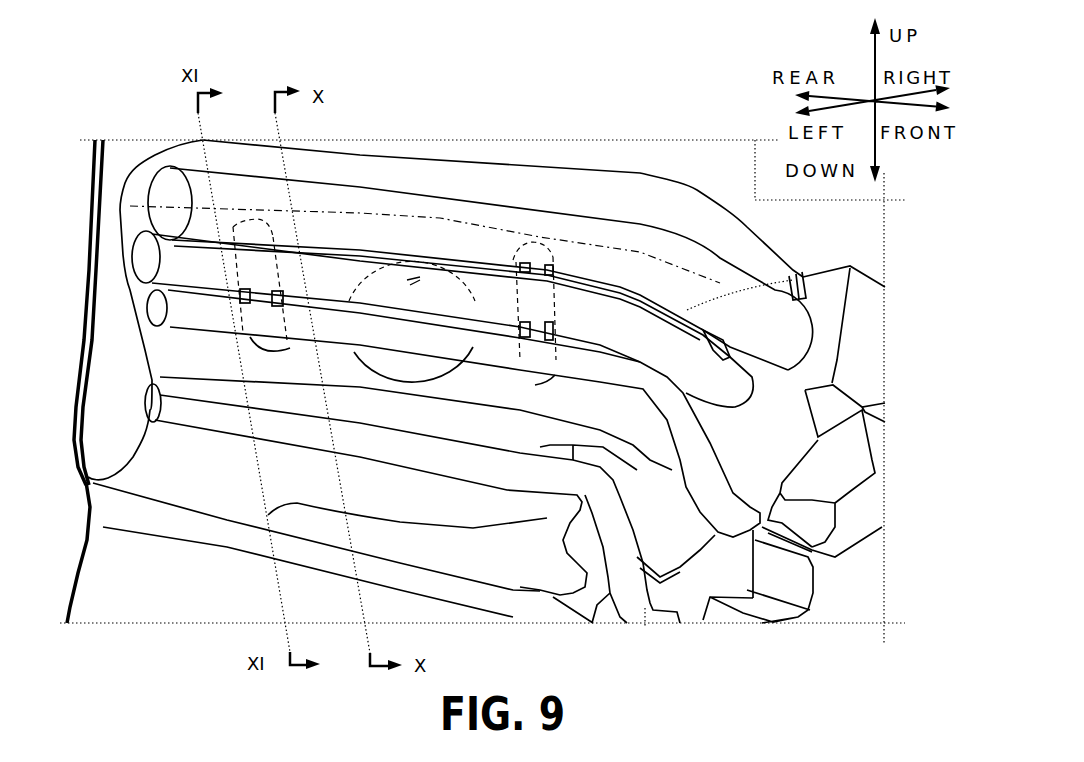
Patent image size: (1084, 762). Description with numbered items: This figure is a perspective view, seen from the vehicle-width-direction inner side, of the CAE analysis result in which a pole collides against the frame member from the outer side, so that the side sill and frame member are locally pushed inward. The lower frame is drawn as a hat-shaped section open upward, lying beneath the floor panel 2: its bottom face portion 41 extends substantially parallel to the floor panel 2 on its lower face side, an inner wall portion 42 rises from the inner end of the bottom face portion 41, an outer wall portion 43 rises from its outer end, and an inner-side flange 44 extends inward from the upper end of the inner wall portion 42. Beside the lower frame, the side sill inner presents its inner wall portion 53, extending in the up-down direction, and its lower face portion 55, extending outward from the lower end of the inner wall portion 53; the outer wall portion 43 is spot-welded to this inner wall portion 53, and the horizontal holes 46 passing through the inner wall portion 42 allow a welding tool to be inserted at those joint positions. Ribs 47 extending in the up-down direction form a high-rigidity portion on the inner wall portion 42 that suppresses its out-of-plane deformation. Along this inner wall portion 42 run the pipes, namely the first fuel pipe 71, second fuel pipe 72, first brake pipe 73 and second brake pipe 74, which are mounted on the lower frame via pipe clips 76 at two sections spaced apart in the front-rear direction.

The floor panel 2 is at (636, 150).
The bottom face portion 41 is at (232, 455).
The inner wall portion 42 is at (177, 353).
The outer wall portion 43 is at (122, 175).
The inner-side flange 44 is at (587, 177).
The horizontal holes 46 is at (410, 285).
The ribs 47 is at (272, 222).
The inner wall portion 53 is at (90, 273).
The lower face portion 55 is at (94, 594).
The first fuel pipe 71 is at (760, 310).
The second fuel pipe 72 is at (800, 270).
The first brake pipe 73 is at (707, 490).
The second brake pipe 74 is at (645, 610).
The pipe clips 76 is at (860, 595).